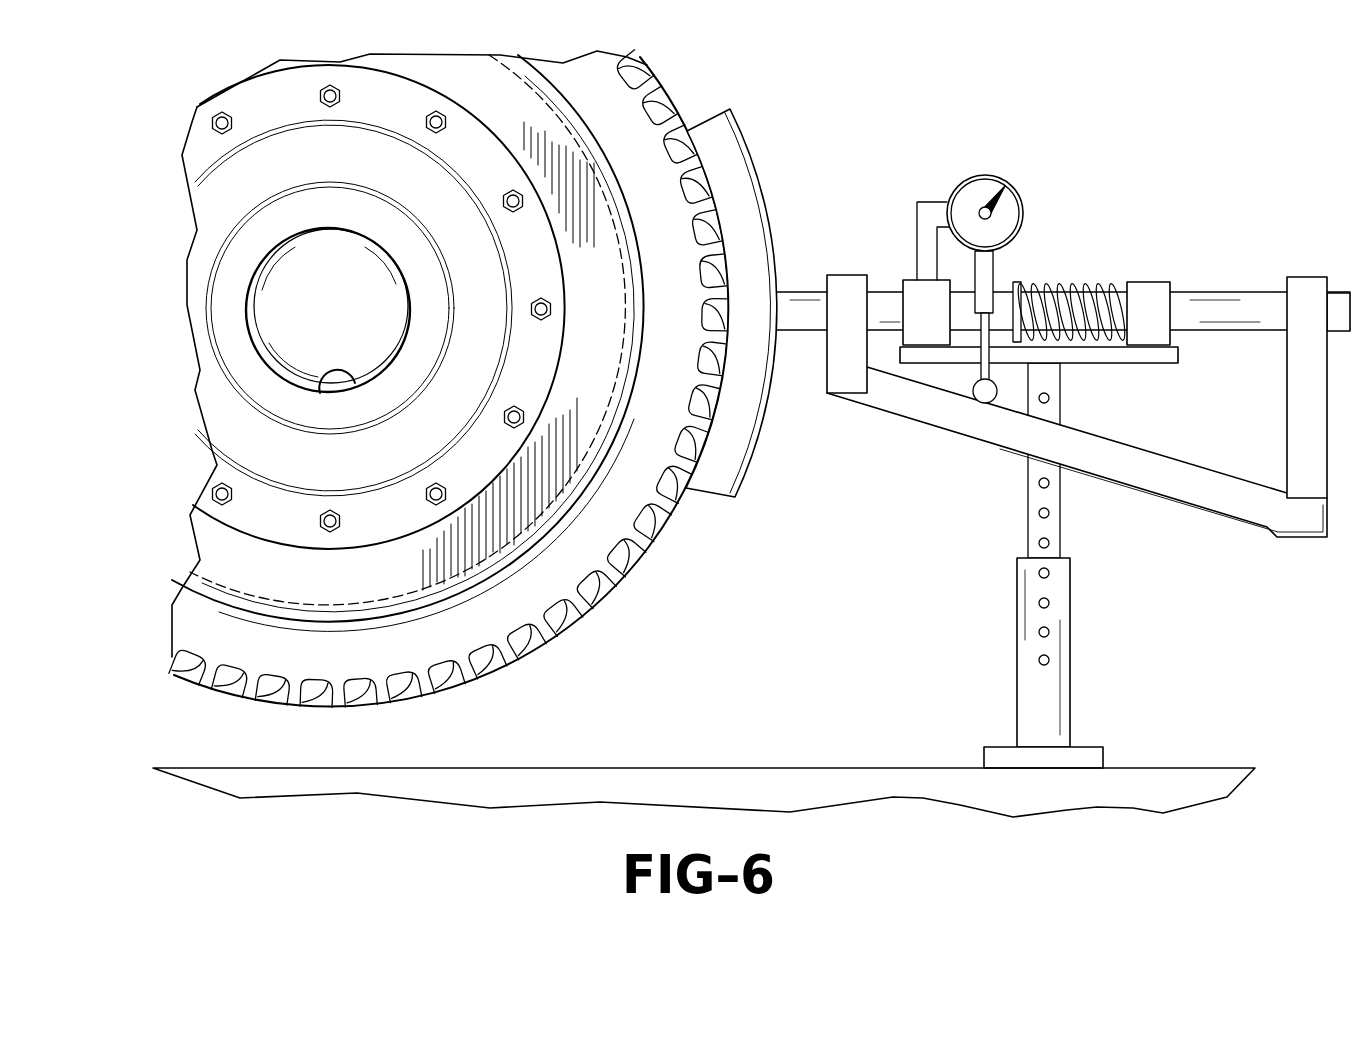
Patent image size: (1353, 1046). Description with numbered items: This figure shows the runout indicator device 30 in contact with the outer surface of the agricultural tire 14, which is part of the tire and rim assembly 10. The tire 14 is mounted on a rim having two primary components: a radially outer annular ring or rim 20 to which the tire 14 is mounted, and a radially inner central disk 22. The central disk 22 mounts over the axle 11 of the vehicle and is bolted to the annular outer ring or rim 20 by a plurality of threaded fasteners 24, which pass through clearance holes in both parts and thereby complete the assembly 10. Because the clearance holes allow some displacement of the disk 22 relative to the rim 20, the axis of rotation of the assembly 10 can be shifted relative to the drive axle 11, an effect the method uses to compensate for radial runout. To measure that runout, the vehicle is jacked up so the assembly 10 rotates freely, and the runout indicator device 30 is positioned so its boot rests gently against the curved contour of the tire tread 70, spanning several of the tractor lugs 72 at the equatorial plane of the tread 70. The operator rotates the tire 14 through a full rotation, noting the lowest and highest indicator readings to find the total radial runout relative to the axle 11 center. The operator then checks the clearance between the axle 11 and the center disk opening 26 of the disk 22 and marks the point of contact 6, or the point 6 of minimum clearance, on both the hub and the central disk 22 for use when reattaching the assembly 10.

The tire and rim assembly 10 is at (662, 66).
The runout indicator device 30 is at (767, 148).
The point of contact 6 is at (300, 226).
The axle 11 is at (298, 328).
The central disk 22 is at (222, 422).
The threaded fasteners 24 is at (214, 493).
The annular outer ring or rim 20 is at (222, 562).
The center disk opening 26 is at (355, 383).
The tractor lugs 72 is at (632, 578).
The tire tread 70 is at (594, 630).
The tire 14 is at (520, 628).